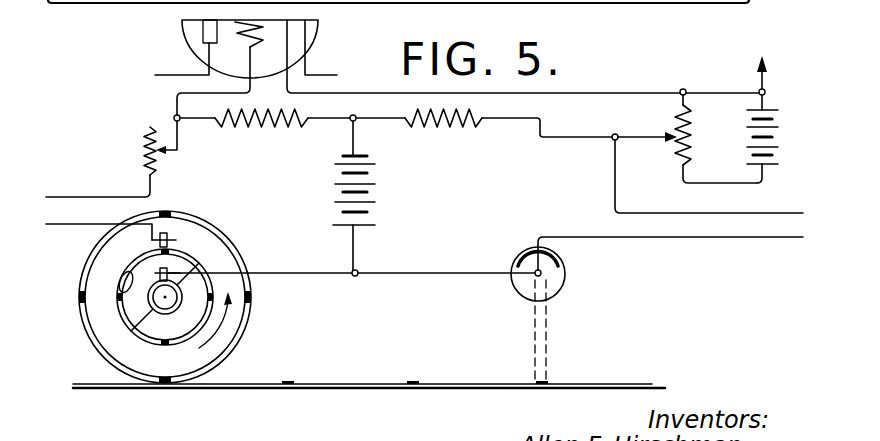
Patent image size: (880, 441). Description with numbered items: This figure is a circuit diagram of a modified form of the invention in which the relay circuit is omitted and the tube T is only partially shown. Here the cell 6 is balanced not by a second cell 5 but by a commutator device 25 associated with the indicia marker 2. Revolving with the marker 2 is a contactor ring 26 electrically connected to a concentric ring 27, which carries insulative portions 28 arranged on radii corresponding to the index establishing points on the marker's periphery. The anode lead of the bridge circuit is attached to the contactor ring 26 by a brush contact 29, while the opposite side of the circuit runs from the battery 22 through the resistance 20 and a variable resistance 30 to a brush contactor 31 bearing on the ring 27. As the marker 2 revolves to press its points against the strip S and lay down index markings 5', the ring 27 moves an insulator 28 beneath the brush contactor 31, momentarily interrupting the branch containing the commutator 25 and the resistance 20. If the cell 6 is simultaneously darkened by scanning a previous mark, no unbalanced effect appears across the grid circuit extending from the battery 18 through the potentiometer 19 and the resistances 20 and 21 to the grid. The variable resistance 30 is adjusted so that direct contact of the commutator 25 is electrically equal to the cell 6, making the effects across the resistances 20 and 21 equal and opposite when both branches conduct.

The tube T is at (188, 38).
The variable resistance 30 is at (146, 152).
The resistance 20 is at (258, 126).
The resistance 21 is at (467, 126).
The battery 22 is at (366, 197).
The potentiometer 19 is at (679, 150).
The battery 18 is at (771, 137).
The commutator device 25 is at (222, 236).
The cell 5 is at (67, 297).
The indicia marker 2 is at (251, 305).
The concentric ring 27 is at (122, 323).
The contactor ring 26 is at (162, 308).
The brush contactor 31 is at (165, 232).
The brush contact 29 is at (170, 265).
The insulative portions 28 is at (132, 274).
The cell 6 is at (556, 284).
The strip S is at (272, 388).
The index markings 5' is at (426, 365).